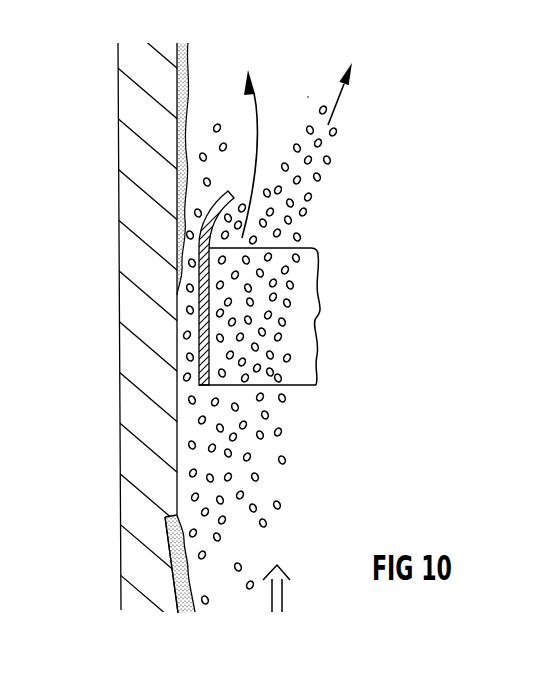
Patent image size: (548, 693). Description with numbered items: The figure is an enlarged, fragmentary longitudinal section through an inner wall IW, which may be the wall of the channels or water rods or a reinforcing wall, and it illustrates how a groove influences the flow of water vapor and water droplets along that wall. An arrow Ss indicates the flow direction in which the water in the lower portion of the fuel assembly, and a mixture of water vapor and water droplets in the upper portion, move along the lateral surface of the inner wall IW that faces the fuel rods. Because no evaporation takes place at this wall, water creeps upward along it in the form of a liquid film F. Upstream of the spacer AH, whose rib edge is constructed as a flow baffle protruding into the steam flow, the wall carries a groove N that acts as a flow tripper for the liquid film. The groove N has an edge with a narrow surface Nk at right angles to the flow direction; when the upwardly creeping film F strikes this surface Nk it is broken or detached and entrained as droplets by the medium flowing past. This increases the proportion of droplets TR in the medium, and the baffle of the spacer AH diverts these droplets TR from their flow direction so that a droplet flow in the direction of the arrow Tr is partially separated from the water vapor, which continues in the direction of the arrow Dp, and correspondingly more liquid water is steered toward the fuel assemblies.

The inner wall IW is at (137, 362).
The film F is at (187, 612).
The groove N is at (170, 586).
The narrow surface Nk is at (168, 517).
The spacer AH is at (300, 316).
The droplets TR is at (311, 199).
The arrow indicating water vapor flow direction Dp is at (257, 118).
The droplet flow Tr is at (338, 93).
The arrow indicating flow direction Ss is at (283, 598).